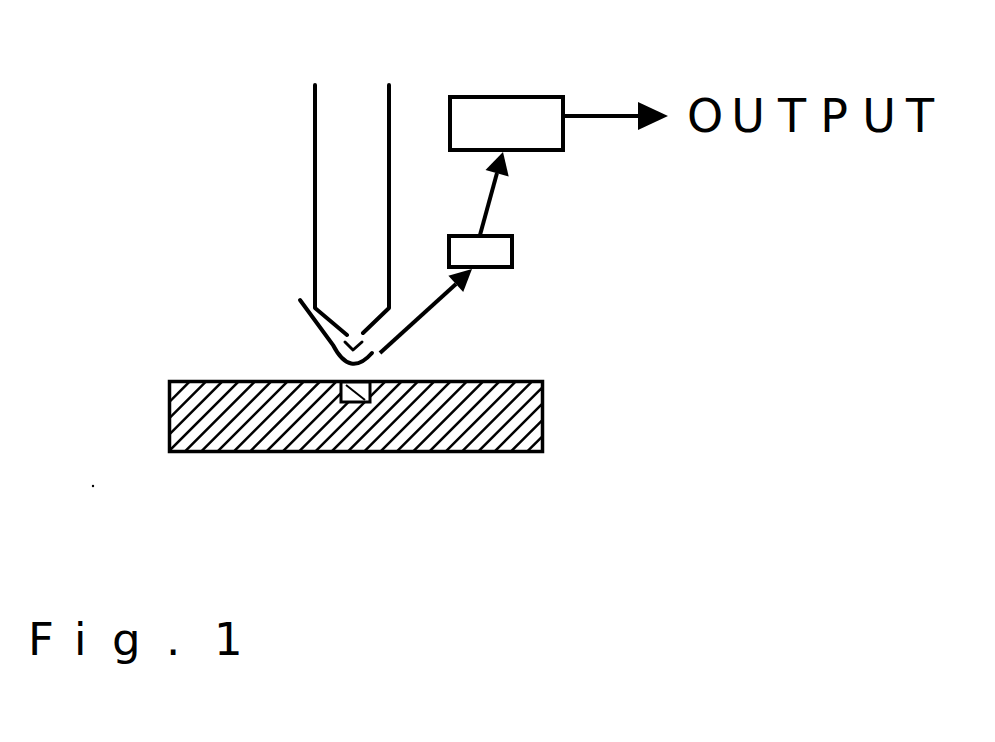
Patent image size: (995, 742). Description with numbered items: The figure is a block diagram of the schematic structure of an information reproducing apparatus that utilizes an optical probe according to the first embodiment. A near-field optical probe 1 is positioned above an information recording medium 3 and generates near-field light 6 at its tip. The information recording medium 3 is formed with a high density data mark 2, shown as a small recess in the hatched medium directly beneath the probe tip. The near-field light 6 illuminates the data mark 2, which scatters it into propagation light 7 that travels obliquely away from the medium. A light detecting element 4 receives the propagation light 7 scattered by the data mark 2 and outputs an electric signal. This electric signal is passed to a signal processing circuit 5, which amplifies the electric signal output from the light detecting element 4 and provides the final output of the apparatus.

The near-field optical probe 1 is at (330, 175).
The data mark 2 is at (347, 403).
The information recording medium 3 is at (240, 408).
The light detecting element 4 is at (490, 252).
The signal processing circuit 5 is at (487, 113).
The near-field light 6 is at (300, 300).
The propagation light 7 is at (426, 314).